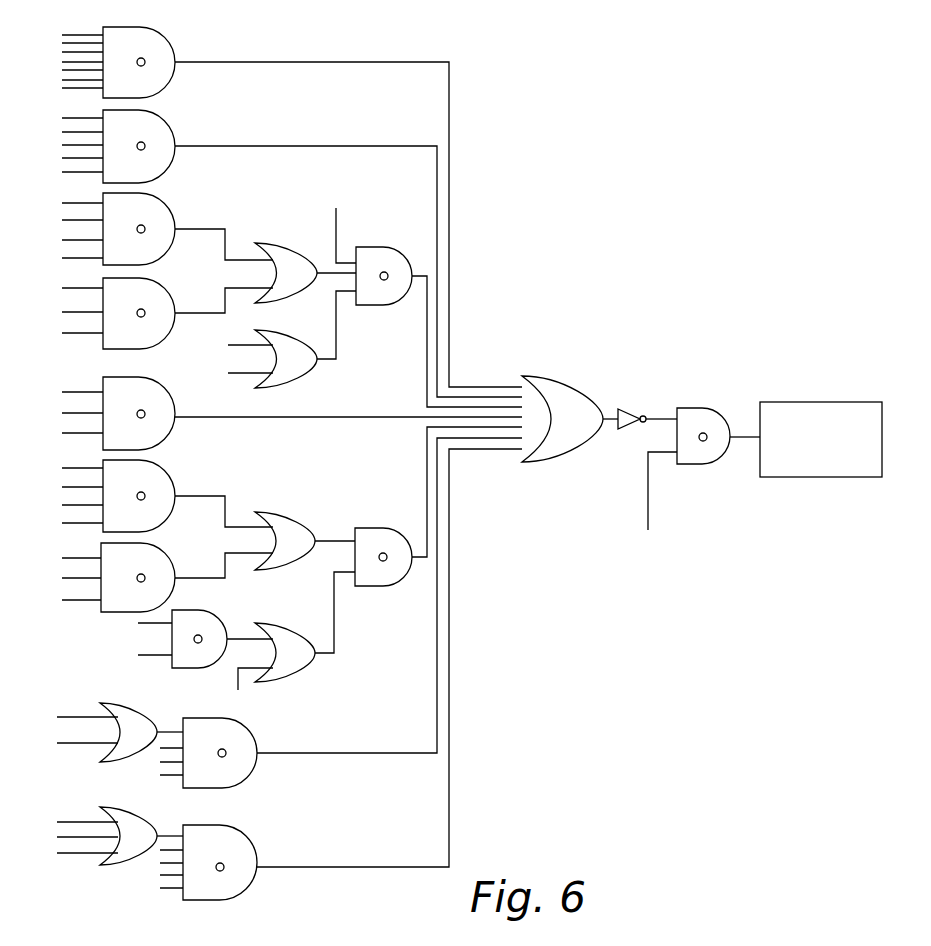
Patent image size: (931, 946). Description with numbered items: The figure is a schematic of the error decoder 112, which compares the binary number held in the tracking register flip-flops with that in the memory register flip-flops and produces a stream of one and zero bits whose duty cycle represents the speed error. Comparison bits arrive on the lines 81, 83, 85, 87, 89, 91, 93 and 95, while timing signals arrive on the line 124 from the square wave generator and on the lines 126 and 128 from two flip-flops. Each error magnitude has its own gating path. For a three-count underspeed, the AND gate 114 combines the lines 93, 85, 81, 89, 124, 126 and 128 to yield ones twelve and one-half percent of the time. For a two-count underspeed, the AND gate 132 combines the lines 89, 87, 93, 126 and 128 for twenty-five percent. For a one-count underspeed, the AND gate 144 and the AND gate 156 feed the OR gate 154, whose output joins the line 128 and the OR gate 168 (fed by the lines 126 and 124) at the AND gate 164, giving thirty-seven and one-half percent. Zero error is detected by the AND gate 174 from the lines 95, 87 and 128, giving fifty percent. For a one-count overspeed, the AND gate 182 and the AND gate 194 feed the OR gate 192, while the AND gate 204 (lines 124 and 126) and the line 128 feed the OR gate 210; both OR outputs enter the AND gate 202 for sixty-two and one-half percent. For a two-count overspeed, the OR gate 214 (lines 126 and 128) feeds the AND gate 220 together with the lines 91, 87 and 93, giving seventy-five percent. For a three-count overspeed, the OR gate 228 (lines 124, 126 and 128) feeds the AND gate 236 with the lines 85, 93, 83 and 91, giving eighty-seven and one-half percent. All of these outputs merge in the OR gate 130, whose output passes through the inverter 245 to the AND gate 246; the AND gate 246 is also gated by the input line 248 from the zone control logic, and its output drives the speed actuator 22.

The speed actuator 22 is at (822, 407).
The line 81 is at (72, 52).
The line 83 is at (158, 900).
The line 85 is at (165, 850).
The line 87 is at (88, 132).
The line 89 is at (80, 70).
The line 91 is at (180, 915).
The line 93 is at (92, 35).
The line 95 is at (69, 423).
The error decoder 112 is at (505, 219).
The AND gate 114 is at (163, 43).
The line 124 is at (147, 445).
The line 126 is at (103, 88).
The line 128 is at (63, 80).
The OR gate 130 is at (560, 378).
The AND gate 132 is at (167, 132).
The AND gate 144 is at (157, 205).
The OR gate 154 is at (287, 245).
The AND gate 156 is at (153, 288).
The AND gate 164 is at (388, 256).
The OR gate 168 is at (303, 380).
The AND gate 174 is at (160, 432).
The AND gate 182 is at (162, 475).
The OR gate 192 is at (297, 517).
The AND gate 194 is at (143, 553).
The AND gate 202 is at (387, 537).
The AND gate 204 is at (205, 613).
The OR gate 210 is at (305, 668).
The OR gate 214 is at (138, 710).
The AND gate 220 is at (252, 770).
The OR gate 228 is at (130, 862).
The AND gate 236 is at (250, 852).
The inverter 245 is at (620, 410).
The AND gate 246 is at (703, 464).
The input line 248 is at (653, 504).